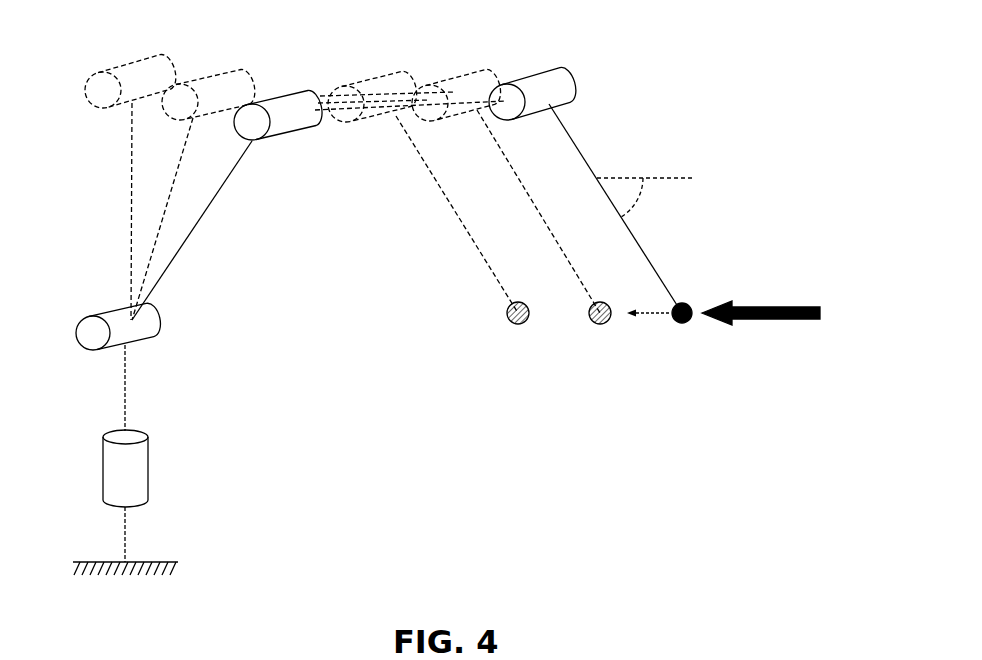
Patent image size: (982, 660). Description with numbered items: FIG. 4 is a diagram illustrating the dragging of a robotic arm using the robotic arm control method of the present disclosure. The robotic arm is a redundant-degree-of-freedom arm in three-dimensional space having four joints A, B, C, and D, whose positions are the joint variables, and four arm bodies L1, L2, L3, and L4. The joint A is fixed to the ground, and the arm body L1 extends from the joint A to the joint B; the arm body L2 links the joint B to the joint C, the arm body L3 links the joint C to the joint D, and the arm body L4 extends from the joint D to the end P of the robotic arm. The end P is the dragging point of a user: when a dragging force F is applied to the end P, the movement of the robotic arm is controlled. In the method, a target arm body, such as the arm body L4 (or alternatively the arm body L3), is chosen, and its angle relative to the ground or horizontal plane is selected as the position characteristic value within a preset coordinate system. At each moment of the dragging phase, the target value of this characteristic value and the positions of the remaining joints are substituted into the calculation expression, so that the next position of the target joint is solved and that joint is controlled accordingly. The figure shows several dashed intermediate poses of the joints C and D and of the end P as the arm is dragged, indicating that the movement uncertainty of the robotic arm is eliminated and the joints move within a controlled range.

The joint A is at (123, 502).
The joint B is at (134, 326).
The joint C is at (203, 97).
The joint D is at (464, 94).
The arm body L1 is at (140, 388).
The arm body L2 is at (191, 211).
The arm body L3 is at (410, 120).
The arm body L4 is at (539, 208).
The end of the robotic arm P is at (599, 330).
The dragging force F is at (761, 302).